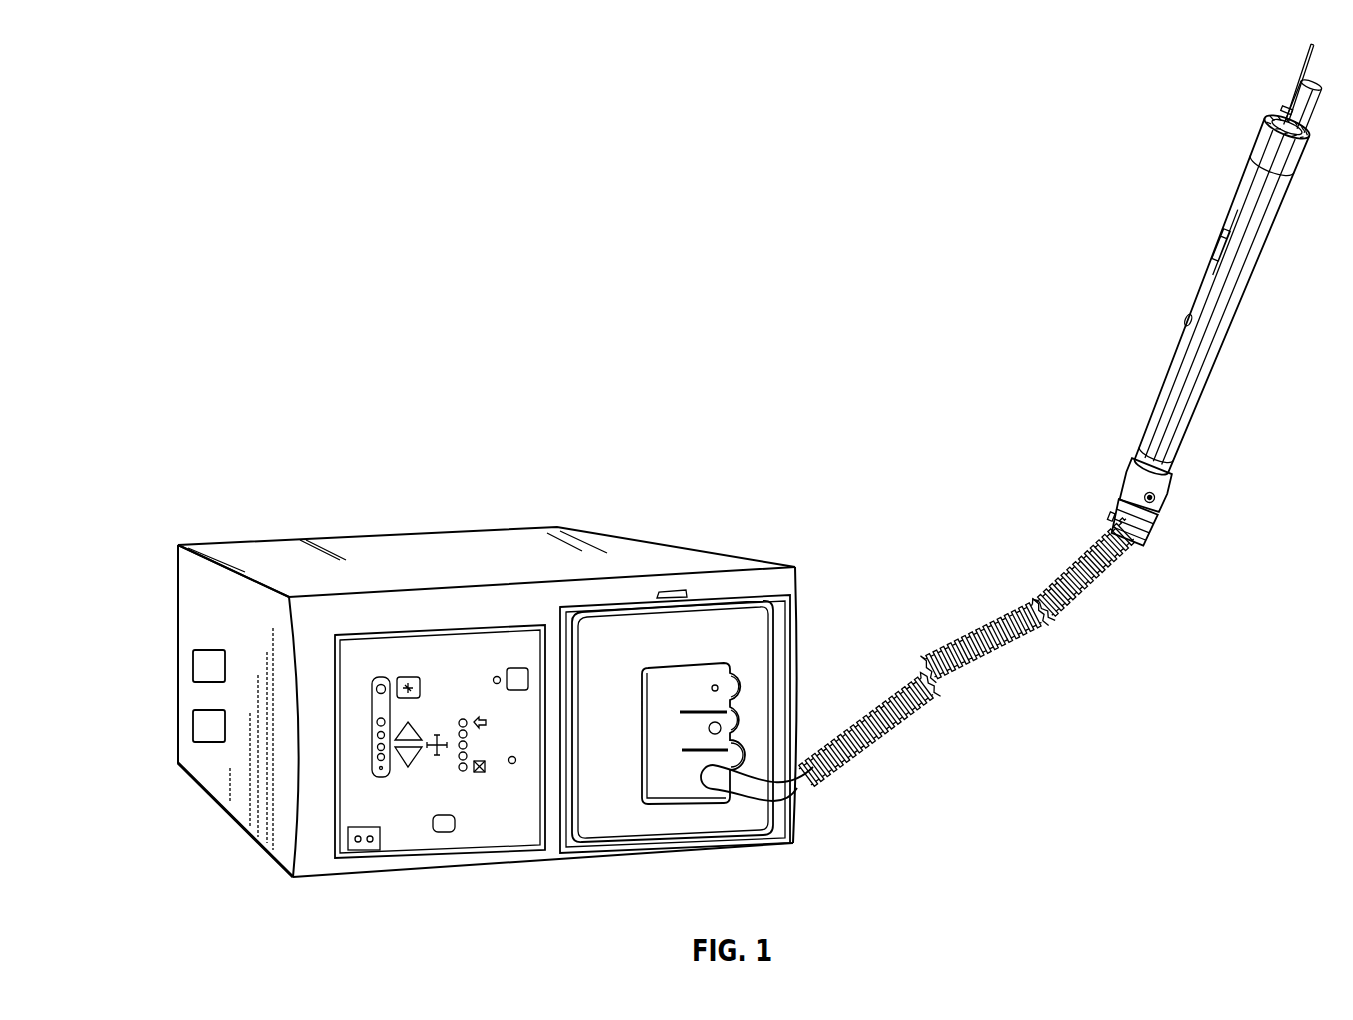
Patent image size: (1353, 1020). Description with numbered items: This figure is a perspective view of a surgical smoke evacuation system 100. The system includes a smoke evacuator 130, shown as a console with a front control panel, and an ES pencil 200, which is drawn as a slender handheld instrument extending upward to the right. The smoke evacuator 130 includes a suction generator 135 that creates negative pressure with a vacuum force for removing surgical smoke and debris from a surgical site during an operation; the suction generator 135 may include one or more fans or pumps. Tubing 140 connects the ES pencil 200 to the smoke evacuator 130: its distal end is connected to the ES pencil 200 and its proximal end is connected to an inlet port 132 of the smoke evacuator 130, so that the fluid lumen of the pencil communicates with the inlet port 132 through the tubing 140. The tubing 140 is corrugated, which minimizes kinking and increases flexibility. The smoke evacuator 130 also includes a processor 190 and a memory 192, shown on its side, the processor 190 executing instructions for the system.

The surgical smoke evacuation system 100 is at (938, 407).
The smoke evacuator 130 is at (448, 530).
The suction generator 135 is at (542, 530).
The inlet port 132 is at (693, 792).
The tubing 140 is at (1088, 592).
The processor 190 is at (193, 668).
The memory 192 is at (193, 728).
The ES pencil 200 is at (1205, 383).